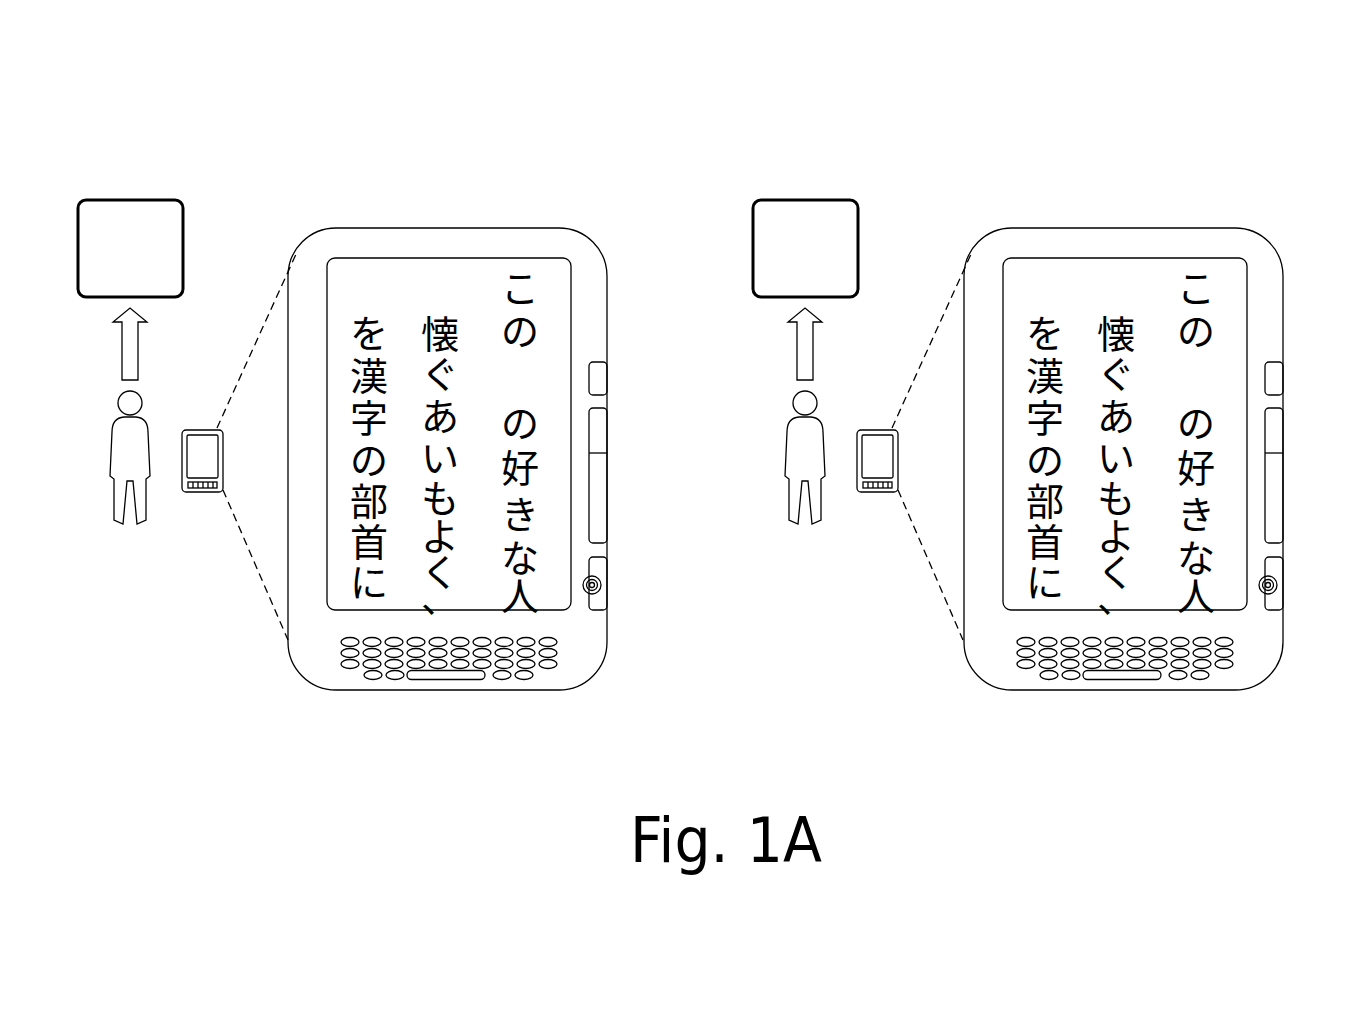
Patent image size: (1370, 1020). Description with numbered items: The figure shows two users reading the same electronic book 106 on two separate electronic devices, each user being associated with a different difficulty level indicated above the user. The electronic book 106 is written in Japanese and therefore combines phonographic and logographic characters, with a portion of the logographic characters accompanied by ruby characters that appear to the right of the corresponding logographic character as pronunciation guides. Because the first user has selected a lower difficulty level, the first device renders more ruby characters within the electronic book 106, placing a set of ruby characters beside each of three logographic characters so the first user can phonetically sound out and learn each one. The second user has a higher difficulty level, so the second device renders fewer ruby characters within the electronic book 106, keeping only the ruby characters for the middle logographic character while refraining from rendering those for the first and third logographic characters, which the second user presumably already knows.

The electronic book 106 is at (1000, 613).